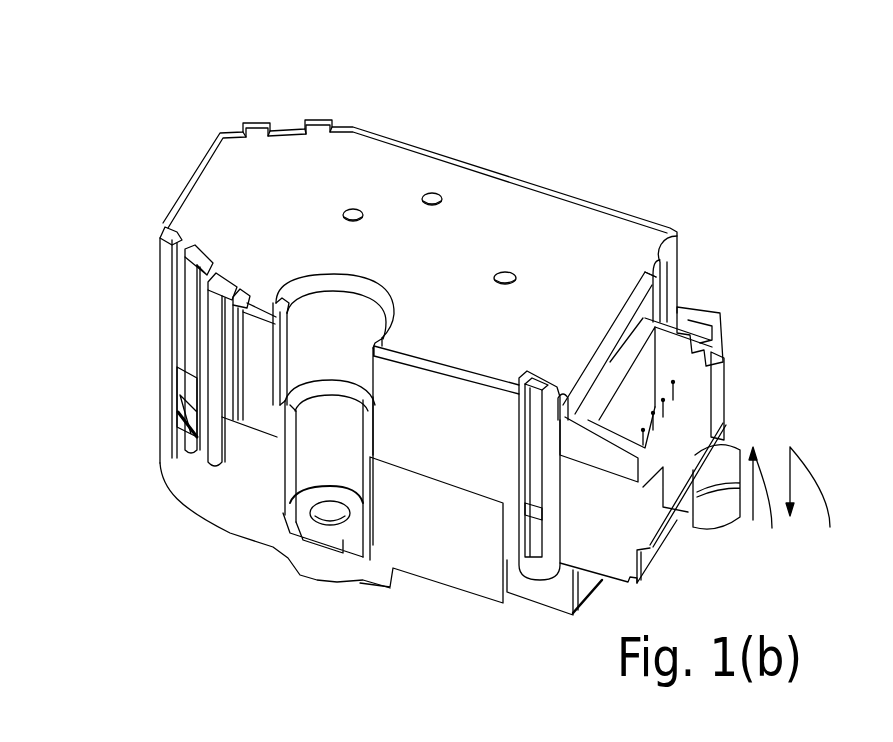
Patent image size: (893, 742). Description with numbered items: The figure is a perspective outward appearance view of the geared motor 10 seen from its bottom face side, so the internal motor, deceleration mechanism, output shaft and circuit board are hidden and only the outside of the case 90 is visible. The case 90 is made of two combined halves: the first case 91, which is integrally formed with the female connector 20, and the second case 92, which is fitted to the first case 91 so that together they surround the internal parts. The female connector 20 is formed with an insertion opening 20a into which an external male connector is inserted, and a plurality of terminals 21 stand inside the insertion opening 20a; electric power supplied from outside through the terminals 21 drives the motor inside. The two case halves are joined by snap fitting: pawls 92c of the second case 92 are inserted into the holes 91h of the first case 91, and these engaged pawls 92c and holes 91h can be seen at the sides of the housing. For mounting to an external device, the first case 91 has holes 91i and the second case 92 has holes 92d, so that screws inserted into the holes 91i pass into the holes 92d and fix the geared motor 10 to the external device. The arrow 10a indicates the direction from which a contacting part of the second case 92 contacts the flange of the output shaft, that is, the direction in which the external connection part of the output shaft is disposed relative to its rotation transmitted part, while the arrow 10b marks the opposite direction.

The geared motor 10 is at (471, 336).
The arrow 10a is at (768, 507).
The reverse direction 10b is at (819, 507).
The case 90 is at (383, 352).
The first case 91 is at (383, 377).
The holes 91h is at (530, 508).
The holes 91i is at (340, 512).
The second case 92 is at (346, 491).
The pawls 92c is at (188, 408).
The holes 92d is at (330, 530).
The female connector 20 is at (662, 357).
The insertion opening 20a is at (677, 327).
The terminals 21 is at (653, 413).